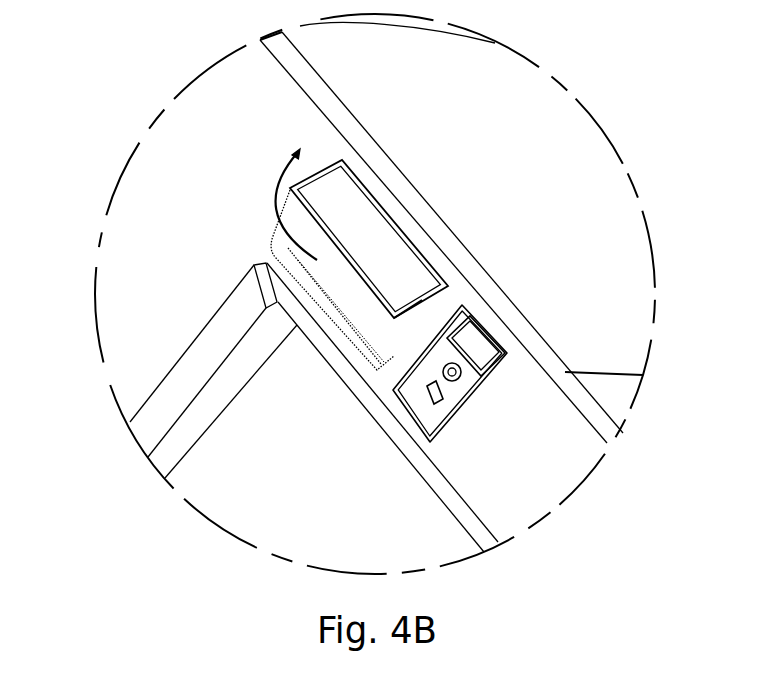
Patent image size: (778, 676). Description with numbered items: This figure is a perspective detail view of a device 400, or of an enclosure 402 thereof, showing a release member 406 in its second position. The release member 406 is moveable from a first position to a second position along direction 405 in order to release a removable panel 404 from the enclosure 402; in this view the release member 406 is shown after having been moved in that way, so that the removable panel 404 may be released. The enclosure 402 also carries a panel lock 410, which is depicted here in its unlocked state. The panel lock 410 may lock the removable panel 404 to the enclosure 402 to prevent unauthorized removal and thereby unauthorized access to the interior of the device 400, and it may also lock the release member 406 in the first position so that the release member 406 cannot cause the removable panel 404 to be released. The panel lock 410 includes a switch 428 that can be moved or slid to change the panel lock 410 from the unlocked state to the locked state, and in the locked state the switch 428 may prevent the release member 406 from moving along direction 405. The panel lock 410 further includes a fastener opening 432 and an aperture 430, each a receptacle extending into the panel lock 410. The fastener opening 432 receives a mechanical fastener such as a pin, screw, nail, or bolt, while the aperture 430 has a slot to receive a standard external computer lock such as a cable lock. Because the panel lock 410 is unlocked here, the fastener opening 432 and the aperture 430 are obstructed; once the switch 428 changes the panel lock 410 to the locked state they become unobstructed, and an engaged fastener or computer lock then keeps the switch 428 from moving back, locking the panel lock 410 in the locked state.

The device 400 is at (108, 152).
The enclosure 402 is at (121, 291).
The removable panel 404 is at (439, 125).
The direction 405 is at (275, 178).
The release member 406 is at (400, 263).
The panel lock 410 is at (486, 402).
The switch 428 is at (465, 337).
The aperture 430 is at (427, 389).
The fastener opening 432 is at (457, 373).